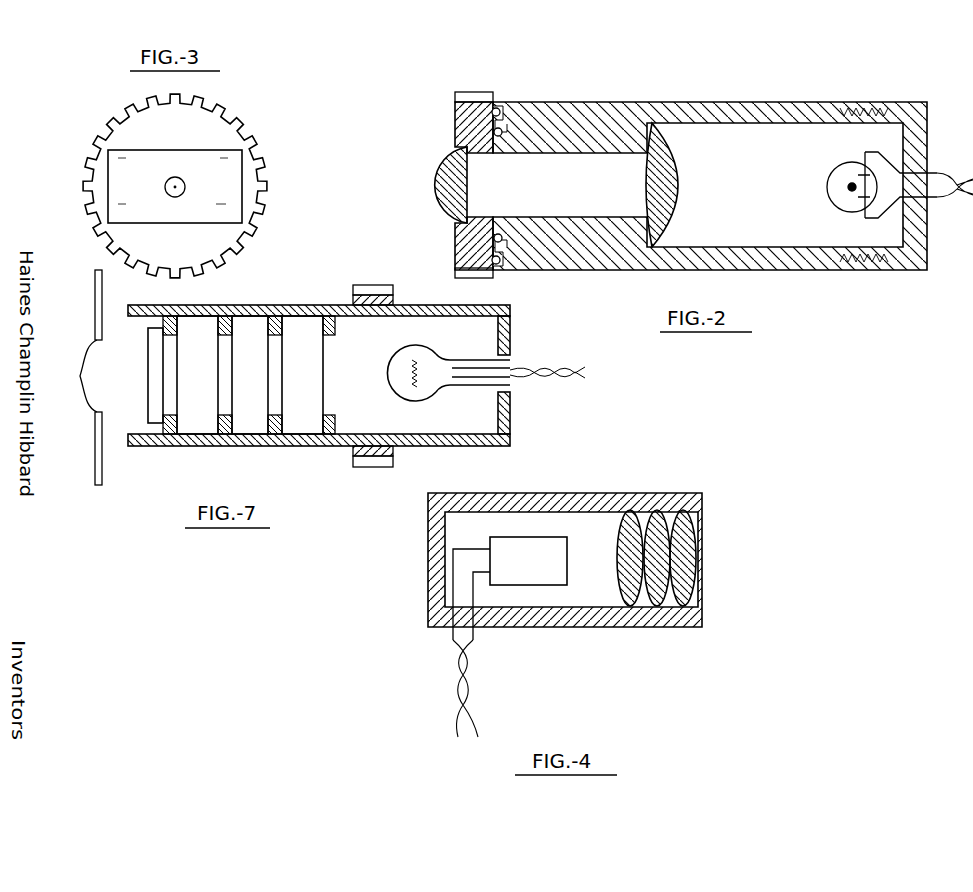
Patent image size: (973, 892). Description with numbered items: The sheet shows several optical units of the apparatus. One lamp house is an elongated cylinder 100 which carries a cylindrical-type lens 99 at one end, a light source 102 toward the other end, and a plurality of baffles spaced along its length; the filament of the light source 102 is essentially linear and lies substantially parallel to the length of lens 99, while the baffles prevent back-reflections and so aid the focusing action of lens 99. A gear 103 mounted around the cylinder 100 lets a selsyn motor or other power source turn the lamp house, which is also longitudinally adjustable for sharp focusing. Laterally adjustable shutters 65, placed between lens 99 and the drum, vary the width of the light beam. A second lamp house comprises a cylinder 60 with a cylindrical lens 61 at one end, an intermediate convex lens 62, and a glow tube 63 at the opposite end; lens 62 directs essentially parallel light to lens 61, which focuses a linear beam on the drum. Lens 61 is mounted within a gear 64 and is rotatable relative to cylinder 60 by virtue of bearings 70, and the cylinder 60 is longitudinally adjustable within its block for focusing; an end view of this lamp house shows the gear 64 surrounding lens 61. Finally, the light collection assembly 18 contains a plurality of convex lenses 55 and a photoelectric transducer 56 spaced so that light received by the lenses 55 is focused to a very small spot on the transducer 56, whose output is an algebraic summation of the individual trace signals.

In FIG. 4, the light collection assembly 18 is at (615, 493).
In FIG. 4, the convex lenses 55 is at (630, 606).
In FIG. 4, the photoelectric transducer 56 is at (535, 537).
In FIG. 2, the cylinder 60 is at (710, 169).
In FIG. 3, the cylindrical lens 61 is at (105, 218).
In FIG. 2, the cylindrical lens 61 is at (452, 152).
In FIG. 2, the intermediate convex lens 62 is at (680, 186).
In FIG. 3, the glow tube 63 is at (110, 128).
In FIG. 2, the glow tube 63 is at (827, 186).
In FIG. 2, the gear 64 is at (455, 108).
In FIG. 7, the shutters 65 is at (82, 377).
In FIG. 2, the bearings 70 is at (502, 128).
In FIG. 7, the cylindrical-type lens 99 is at (148, 374).
In FIG. 7, the elongated cylinder 100 is at (188, 446).
In FIG. 7, the light source 102 is at (412, 366).
In FIG. 7, the gear 103 is at (393, 455).